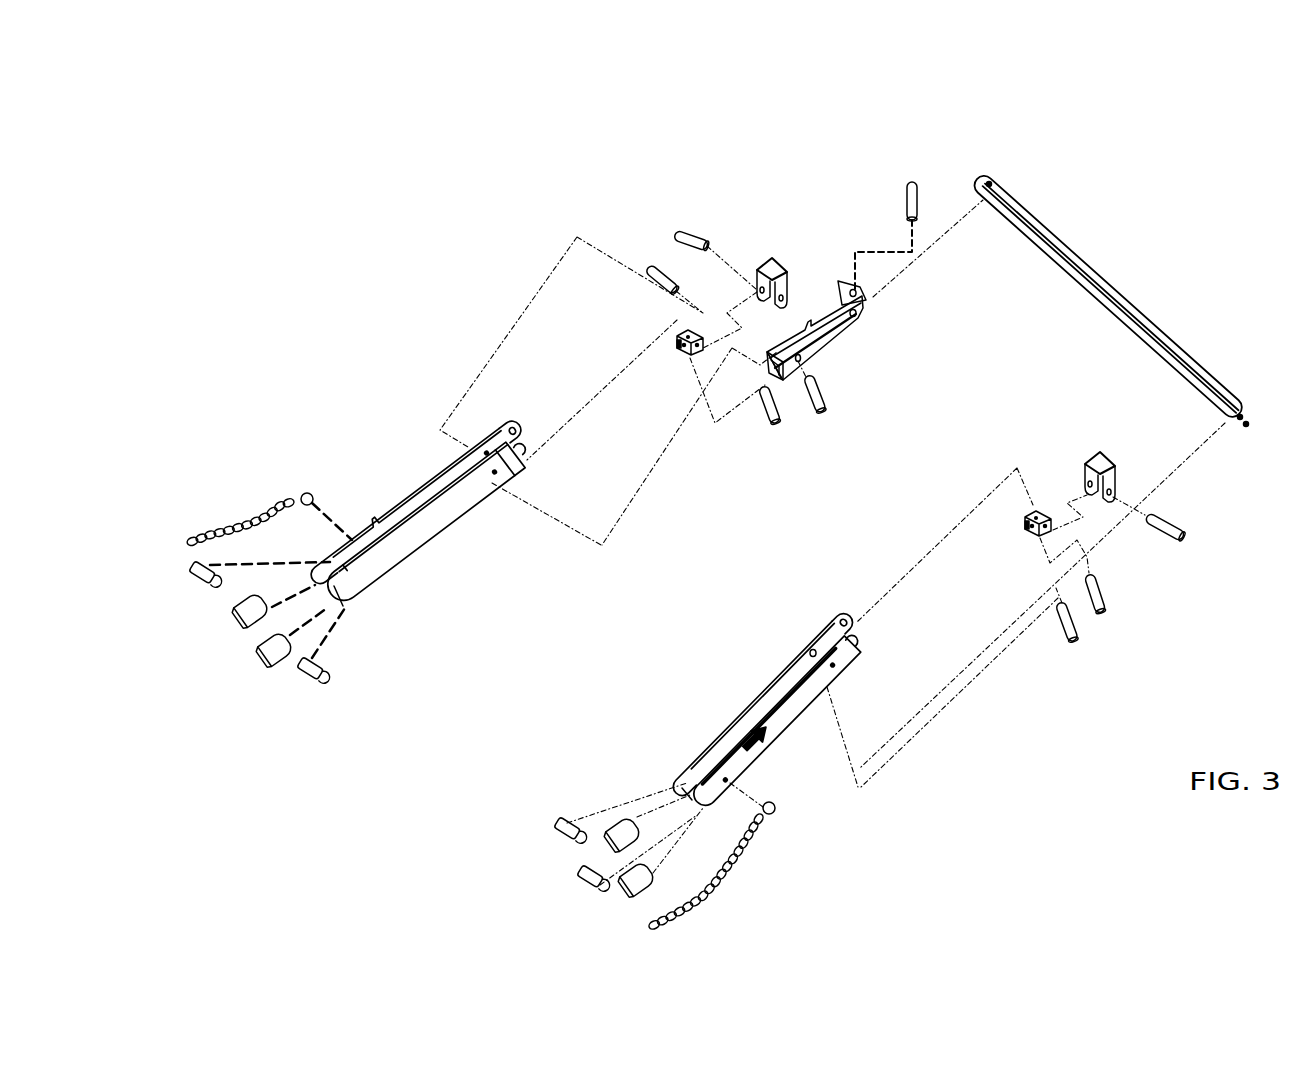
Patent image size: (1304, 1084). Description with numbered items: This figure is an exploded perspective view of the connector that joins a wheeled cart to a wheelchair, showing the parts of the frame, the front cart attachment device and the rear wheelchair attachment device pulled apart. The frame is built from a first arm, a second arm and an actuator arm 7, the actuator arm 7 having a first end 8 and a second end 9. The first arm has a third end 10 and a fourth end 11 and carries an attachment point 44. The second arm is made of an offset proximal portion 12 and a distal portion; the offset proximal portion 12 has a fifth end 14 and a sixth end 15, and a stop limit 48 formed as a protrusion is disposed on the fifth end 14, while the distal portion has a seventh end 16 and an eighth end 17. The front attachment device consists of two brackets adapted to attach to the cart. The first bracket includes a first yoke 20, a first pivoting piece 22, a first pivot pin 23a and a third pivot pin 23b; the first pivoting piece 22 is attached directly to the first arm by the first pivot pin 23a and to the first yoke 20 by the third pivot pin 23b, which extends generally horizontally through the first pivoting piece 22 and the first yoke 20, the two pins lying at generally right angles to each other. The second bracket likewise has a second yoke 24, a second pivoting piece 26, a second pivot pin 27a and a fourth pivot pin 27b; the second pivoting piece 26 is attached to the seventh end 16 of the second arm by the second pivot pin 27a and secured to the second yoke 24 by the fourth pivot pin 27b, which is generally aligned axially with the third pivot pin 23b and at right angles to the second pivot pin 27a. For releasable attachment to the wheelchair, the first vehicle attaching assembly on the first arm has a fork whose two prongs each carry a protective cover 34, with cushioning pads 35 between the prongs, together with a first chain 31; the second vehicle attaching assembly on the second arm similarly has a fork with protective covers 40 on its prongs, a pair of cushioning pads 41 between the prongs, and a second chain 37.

The actuator arm 7 is at (994, 178).
The first end 8 is at (1243, 421).
The second end 9 is at (989, 184).
The third end 10 is at (840, 632).
The fourth end 11 is at (713, 753).
The offset proximal portion 12 is at (822, 350).
The fifth end 14 is at (858, 315).
The sixth end 15 is at (783, 382).
The seventh end 16 is at (517, 425).
The eighth end 17 is at (358, 555).
The first yoke 20 is at (1100, 450).
The first pivoting piece 22 is at (1030, 529).
The first pivot pin 23a is at (1101, 618).
The third pivot pin 23b is at (1190, 540).
The second yoke 24 is at (780, 255).
The second pivoting piece 26 is at (676, 354).
The second pivot pin 27a is at (772, 430).
The fourth pivot pin 27b is at (672, 232).
The first chain 31 is at (717, 880).
The protective cover 34 is at (646, 860).
The cushioning pads 35 is at (565, 840).
The second chain 37 is at (243, 523).
The protective cover 40 is at (240, 627).
The cushioning pads 41 is at (193, 580).
The attachment point 44 is at (810, 652).
The stop limit 48 is at (840, 288).